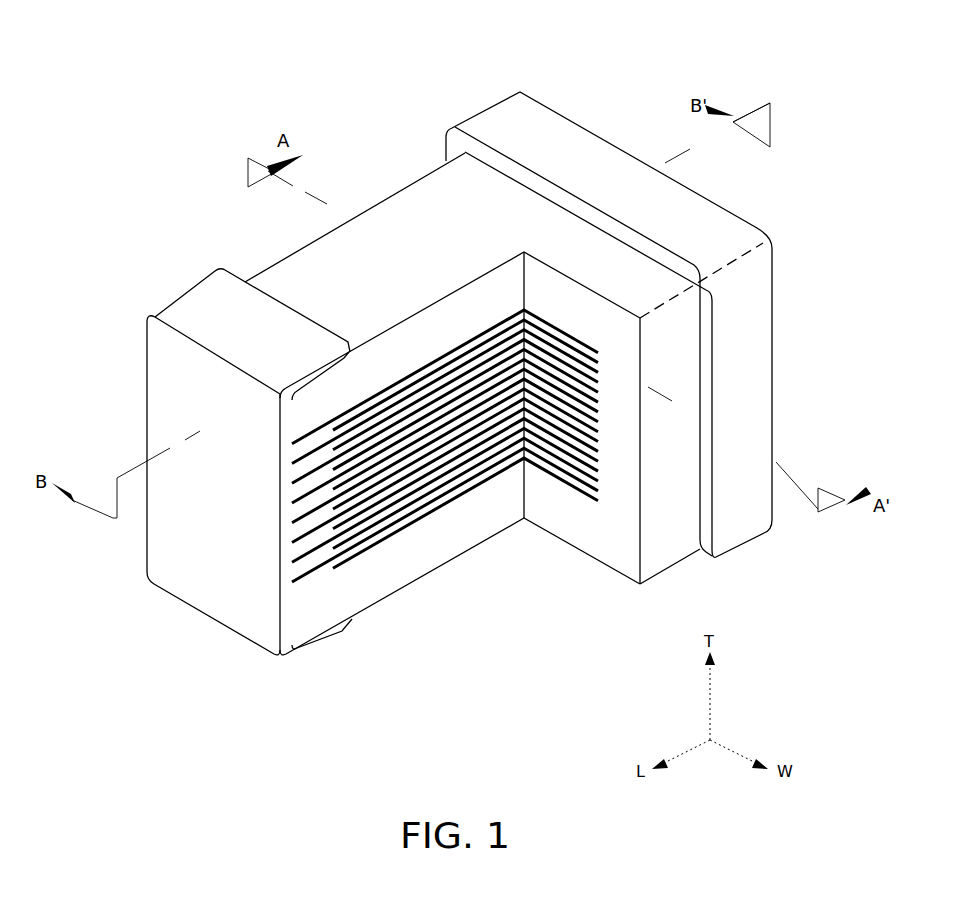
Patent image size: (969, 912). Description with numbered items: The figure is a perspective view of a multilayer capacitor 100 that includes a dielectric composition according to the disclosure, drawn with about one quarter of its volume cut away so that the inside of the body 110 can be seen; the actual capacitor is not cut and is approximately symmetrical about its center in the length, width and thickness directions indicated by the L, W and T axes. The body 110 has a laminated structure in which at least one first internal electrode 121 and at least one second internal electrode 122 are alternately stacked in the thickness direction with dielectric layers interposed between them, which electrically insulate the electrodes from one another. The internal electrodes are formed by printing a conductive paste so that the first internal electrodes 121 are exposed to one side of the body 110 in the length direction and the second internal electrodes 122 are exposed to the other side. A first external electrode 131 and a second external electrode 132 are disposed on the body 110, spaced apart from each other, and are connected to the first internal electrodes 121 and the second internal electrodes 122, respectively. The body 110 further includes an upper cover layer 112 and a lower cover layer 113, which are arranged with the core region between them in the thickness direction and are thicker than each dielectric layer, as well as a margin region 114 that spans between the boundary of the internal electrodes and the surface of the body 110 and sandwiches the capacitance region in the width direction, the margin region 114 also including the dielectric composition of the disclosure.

The multilayer capacitor 100 is at (267, 80).
The body 110 is at (493, 193).
The upper cover layer 112 is at (427, 337).
The lower cover layer 113 is at (430, 558).
The margin region 114 is at (625, 512).
The first internal electrode 121 is at (307, 432).
The second internal electrode 122 is at (357, 558).
The first external electrode 131 is at (200, 307).
The second external electrode 132 is at (553, 132).